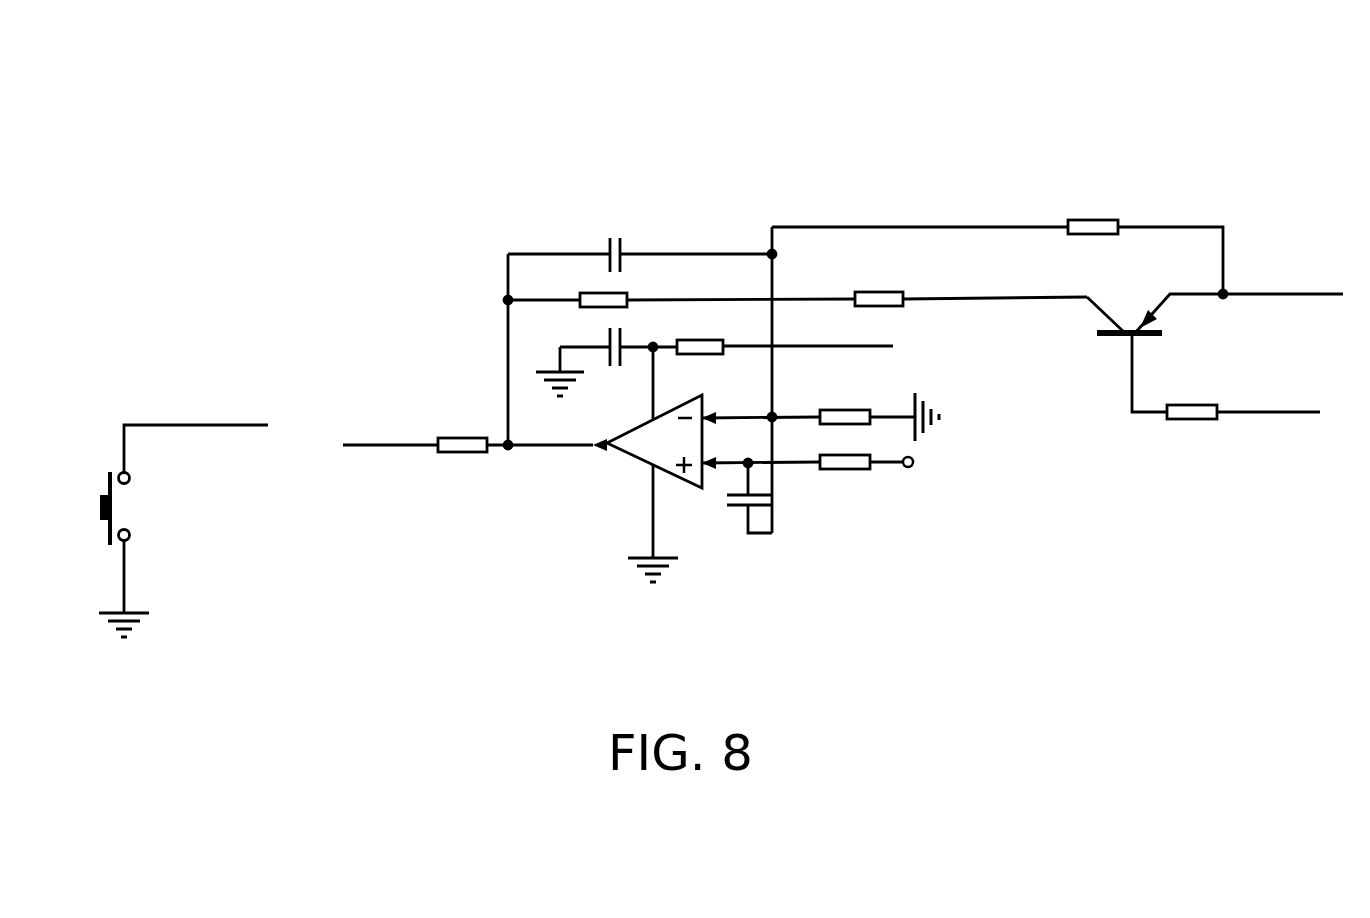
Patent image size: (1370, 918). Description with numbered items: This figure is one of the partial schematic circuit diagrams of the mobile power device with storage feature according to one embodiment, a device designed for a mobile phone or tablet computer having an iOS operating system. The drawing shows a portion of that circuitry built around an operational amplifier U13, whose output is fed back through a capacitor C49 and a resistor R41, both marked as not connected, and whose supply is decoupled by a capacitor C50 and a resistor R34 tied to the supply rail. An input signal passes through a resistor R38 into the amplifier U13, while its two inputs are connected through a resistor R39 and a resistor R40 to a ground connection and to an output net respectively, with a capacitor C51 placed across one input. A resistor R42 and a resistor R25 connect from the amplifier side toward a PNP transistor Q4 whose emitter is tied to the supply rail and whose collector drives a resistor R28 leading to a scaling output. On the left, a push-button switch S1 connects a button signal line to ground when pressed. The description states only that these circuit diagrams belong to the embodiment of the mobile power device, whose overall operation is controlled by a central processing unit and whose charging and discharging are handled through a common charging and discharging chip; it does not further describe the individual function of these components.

The push button switch S1 is at (187, 514).
The resistor 10K R38 is at (468, 445).
The operational amplifier U13 is at (663, 464).
The capacitor (NC) C49 is at (640, 242).
The resistor (NC) R41 is at (681, 289).
The capacitor 0.1uF C50 is at (606, 358).
The resistor 10R R34 is at (788, 349).
The resistor 200K R42 is at (971, 274).
The resistor 3.3K R39 is at (879, 403).
The resistor 3.3K R40 is at (898, 462).
The capacitor 0.1uF C51 is at (728, 498).
The resistor 4.7M R25 is at (1062, 234).
The PNP transistor Q4 is at (1155, 330).
The resistor 240K R28 is at (1247, 386).